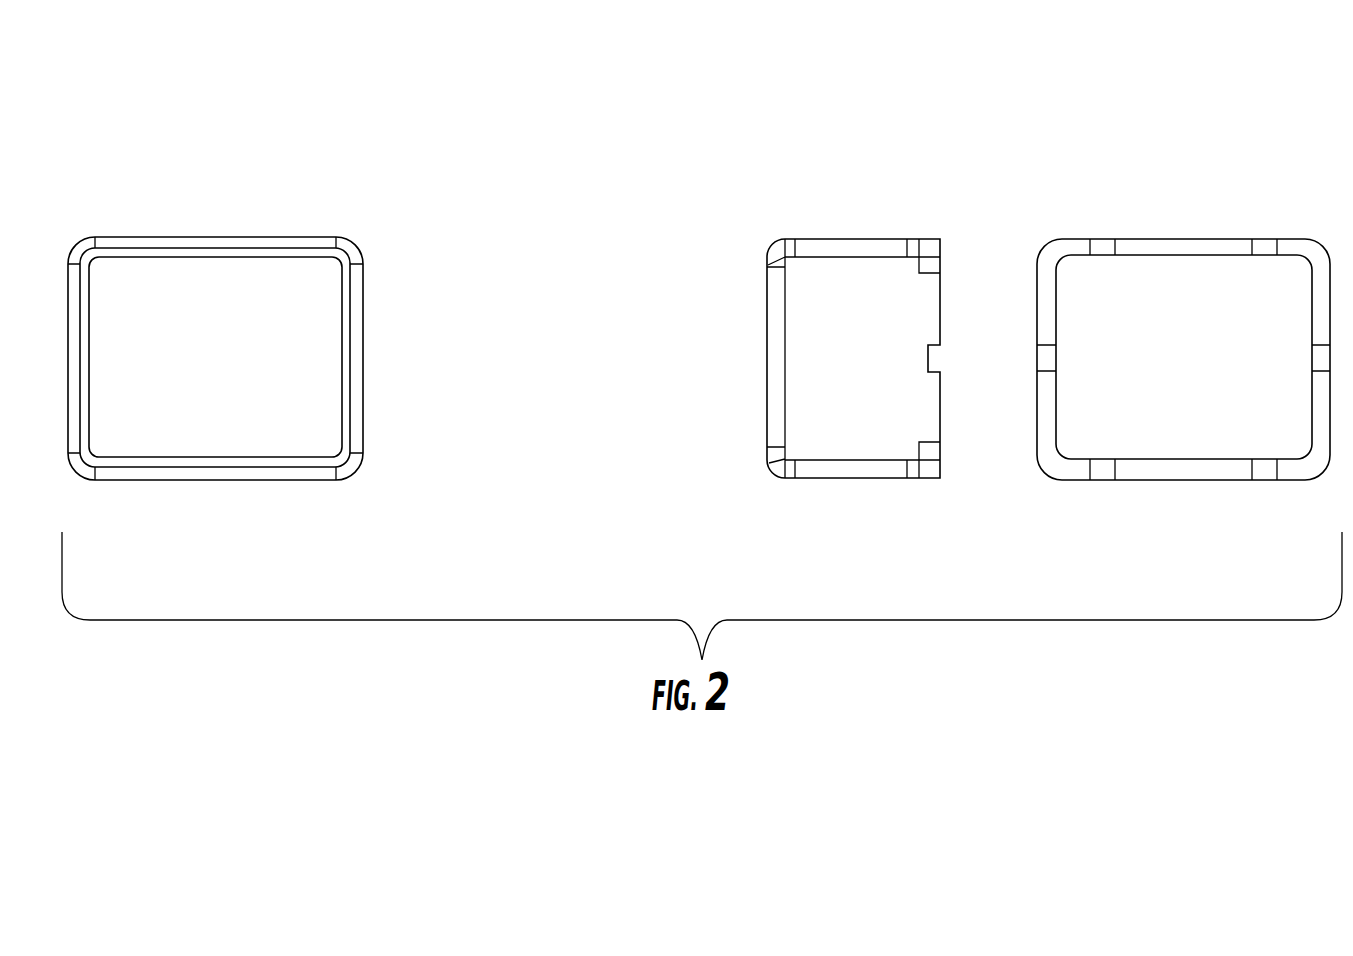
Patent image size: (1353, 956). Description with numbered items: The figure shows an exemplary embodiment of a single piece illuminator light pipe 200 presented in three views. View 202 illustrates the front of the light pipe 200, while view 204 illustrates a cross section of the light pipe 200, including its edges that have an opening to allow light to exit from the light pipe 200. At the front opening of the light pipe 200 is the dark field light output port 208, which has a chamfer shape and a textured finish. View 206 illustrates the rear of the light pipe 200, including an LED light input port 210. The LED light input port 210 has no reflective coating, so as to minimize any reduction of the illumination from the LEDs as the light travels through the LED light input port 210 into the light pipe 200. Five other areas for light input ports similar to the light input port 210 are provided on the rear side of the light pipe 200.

The single piece illuminator light pipe 200 is at (565, 90).
The view 202 is at (247, 228).
The view 204 is at (805, 235).
The view 206 is at (1170, 230).
The dark field light output port 208 is at (773, 256).
The LED light input port 210 is at (1098, 468).